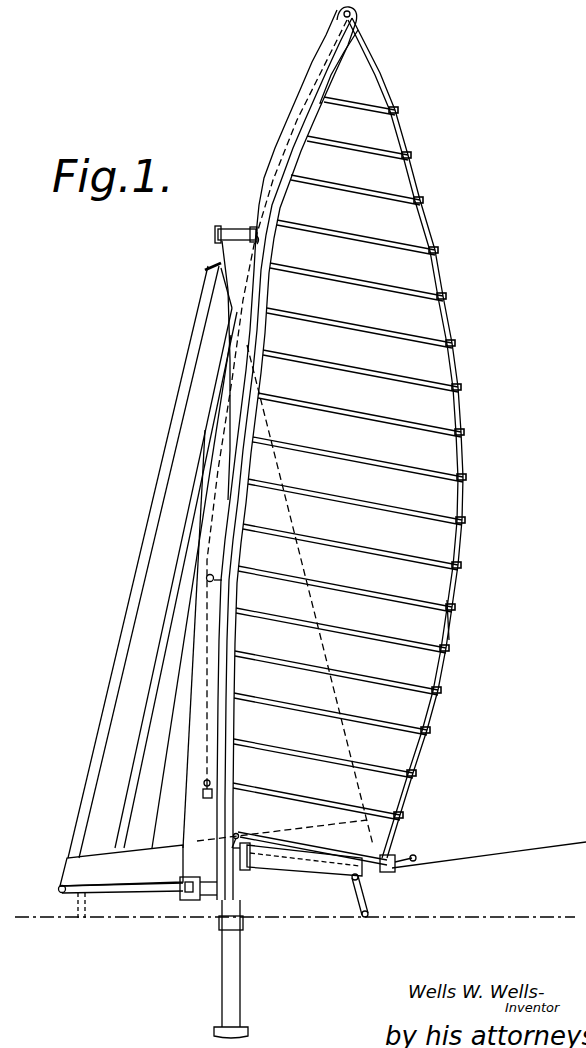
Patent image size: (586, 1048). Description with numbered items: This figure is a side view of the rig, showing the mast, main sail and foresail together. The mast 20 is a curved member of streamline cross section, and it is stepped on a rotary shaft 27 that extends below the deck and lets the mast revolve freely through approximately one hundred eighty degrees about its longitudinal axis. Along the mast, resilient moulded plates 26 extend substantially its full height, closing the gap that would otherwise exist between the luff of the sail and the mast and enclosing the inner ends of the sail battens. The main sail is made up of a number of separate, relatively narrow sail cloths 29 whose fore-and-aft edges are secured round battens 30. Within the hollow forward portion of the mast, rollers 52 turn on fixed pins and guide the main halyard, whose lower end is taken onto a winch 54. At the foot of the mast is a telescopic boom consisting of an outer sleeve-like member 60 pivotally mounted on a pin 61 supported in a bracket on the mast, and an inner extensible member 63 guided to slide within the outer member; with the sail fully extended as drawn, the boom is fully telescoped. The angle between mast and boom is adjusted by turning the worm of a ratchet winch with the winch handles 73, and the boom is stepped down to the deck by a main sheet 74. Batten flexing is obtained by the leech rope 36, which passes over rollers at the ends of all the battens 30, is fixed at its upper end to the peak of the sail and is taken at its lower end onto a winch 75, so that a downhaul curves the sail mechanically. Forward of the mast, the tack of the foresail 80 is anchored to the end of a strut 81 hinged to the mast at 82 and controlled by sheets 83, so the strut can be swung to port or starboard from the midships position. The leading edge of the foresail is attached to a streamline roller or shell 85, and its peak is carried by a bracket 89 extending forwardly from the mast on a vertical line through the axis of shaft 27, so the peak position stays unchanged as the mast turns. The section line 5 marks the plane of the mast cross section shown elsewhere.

The section line 5- 5 is at (203, 404).
The mast 20 is at (287, 127).
The plates 26 is at (259, 340).
The rotary shaft 27 is at (240, 962).
The sail cloths 29 is at (436, 322).
The battens 30 is at (462, 384).
The leech rope 36 is at (446, 618).
The rollers 52 is at (258, 238).
The winch 54 is at (211, 795).
The outer sleeve-like member 60 is at (287, 870).
The pin 61 is at (249, 862).
The inner extensible member 63 is at (372, 872).
The winch handles 73 is at (234, 838).
The main sheet 74 is at (341, 898).
The winch 75 is at (402, 864).
The foresail 80 is at (142, 655).
The strut 81 is at (121, 869).
The hinge 82 is at (183, 890).
The sheets 83 is at (80, 899).
The roller or shell 85 is at (112, 700).
The bracket 89 is at (231, 227).